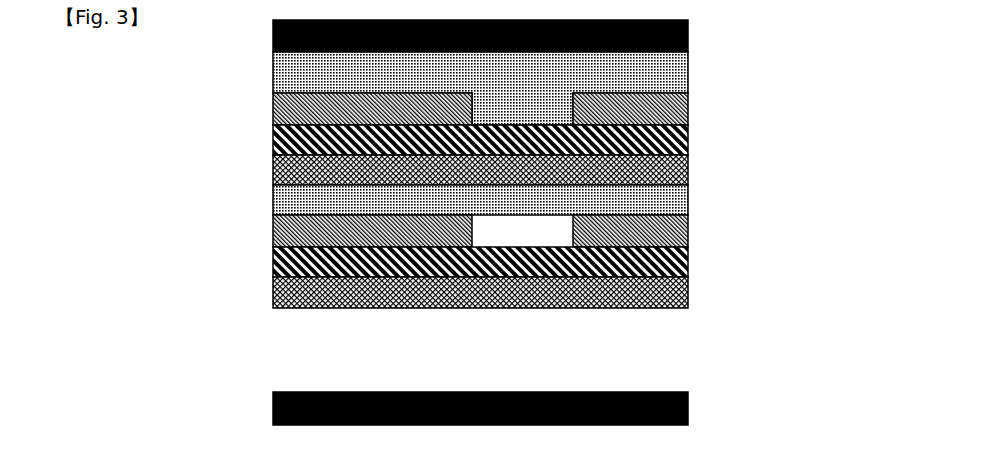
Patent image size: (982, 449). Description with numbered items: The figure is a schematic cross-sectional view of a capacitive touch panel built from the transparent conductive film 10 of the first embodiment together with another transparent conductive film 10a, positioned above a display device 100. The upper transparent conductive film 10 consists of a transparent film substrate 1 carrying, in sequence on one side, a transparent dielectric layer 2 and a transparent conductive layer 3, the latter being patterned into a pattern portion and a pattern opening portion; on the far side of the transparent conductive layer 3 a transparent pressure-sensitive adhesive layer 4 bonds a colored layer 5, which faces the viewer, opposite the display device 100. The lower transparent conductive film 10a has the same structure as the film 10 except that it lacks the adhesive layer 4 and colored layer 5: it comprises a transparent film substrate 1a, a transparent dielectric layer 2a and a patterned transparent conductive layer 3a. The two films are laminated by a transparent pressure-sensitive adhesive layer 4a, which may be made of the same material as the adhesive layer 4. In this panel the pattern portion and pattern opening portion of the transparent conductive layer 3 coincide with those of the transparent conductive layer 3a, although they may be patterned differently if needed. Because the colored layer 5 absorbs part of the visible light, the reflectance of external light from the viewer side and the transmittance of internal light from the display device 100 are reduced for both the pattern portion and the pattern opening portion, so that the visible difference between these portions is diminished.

The transparent film substrate 1 is at (688, 172).
The transparent dielectric layer 2 is at (688, 142).
The transparent conductive layer 3 is at (688, 110).
The transparent pressure-sensitive adhesive layer 4 is at (688, 73).
The colored layer 5 is at (688, 40).
The transparent film substrate 1a is at (688, 293).
The transparent dielectric layer 2a is at (688, 262).
The transparent conductive layer 3a is at (688, 233).
The transparent pressure-sensitive adhesive layer 4a is at (688, 200).
The transparent conductive film 10 is at (798, 10).
The transparent conductive film 10a is at (798, 208).
The display device 100 is at (688, 410).